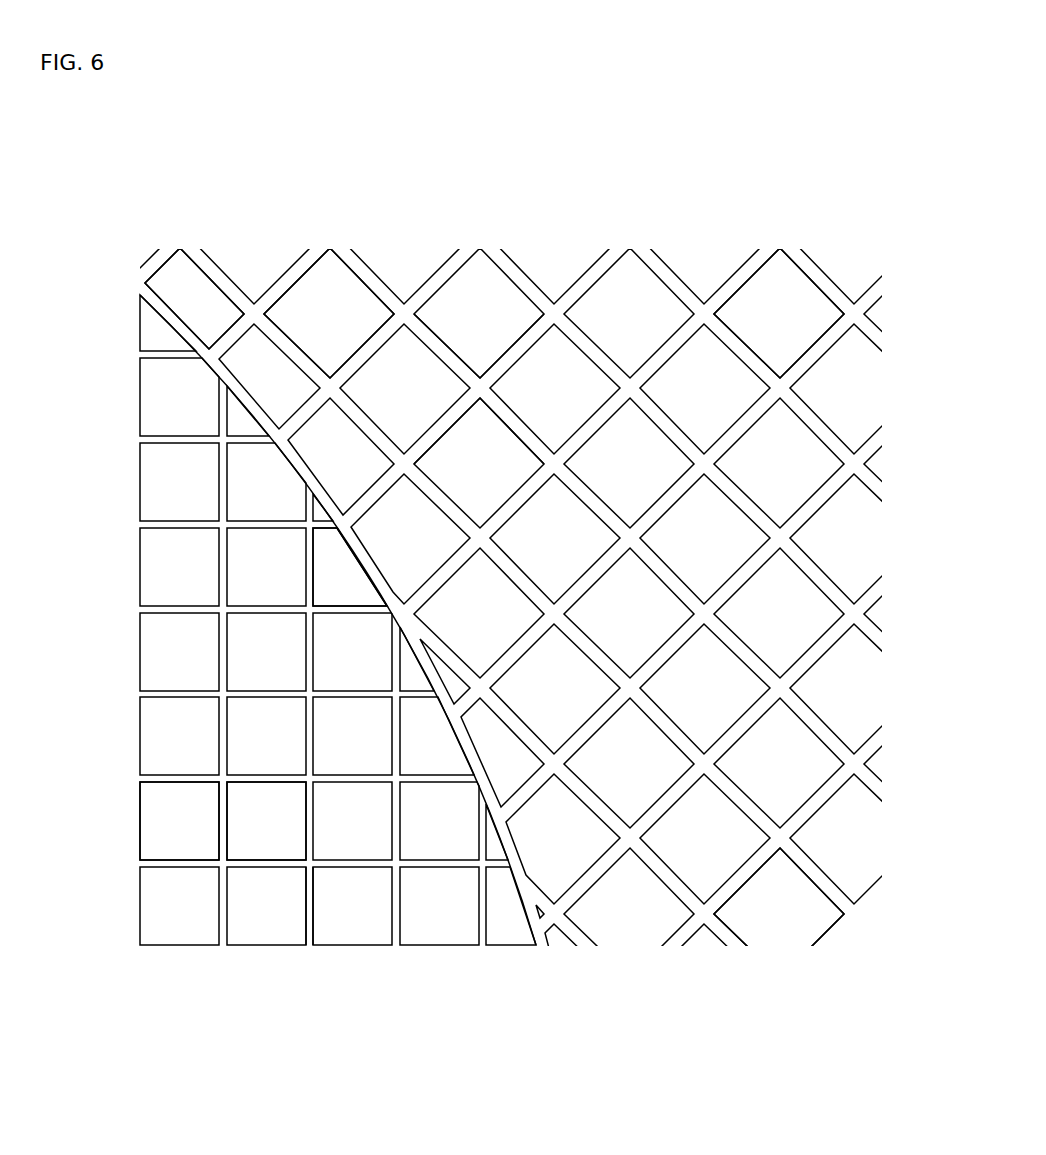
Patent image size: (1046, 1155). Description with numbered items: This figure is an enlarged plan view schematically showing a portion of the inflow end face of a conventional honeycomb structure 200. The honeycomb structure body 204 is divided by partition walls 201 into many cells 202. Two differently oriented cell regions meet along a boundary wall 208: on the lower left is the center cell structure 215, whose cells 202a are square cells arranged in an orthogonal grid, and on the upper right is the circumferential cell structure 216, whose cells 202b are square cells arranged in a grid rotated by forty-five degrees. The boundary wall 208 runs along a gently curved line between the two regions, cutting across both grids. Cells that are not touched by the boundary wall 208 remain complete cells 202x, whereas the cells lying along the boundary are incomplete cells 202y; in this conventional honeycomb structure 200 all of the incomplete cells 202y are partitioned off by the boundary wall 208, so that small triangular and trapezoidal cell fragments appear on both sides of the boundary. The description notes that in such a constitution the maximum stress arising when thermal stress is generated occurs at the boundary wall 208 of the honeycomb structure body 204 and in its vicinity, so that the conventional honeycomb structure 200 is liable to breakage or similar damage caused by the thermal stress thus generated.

The honeycomb structure 200 is at (783, 78).
The partition wall 201 is at (480, 385).
The cell 202 is at (529, 614).
The cell of center cell structure 202a is at (338, 620).
The cell of circumferential cell structure 202b is at (529, 614).
The complete cell 202x is at (338, 327).
The incomplete cell 202y is at (185, 293).
The honeycomb structure body 204 is at (805, 242).
The boundary wall 208 is at (297, 462).
The center cell structure 215 is at (167, 798).
The circumferential cell structure 216 is at (775, 897).